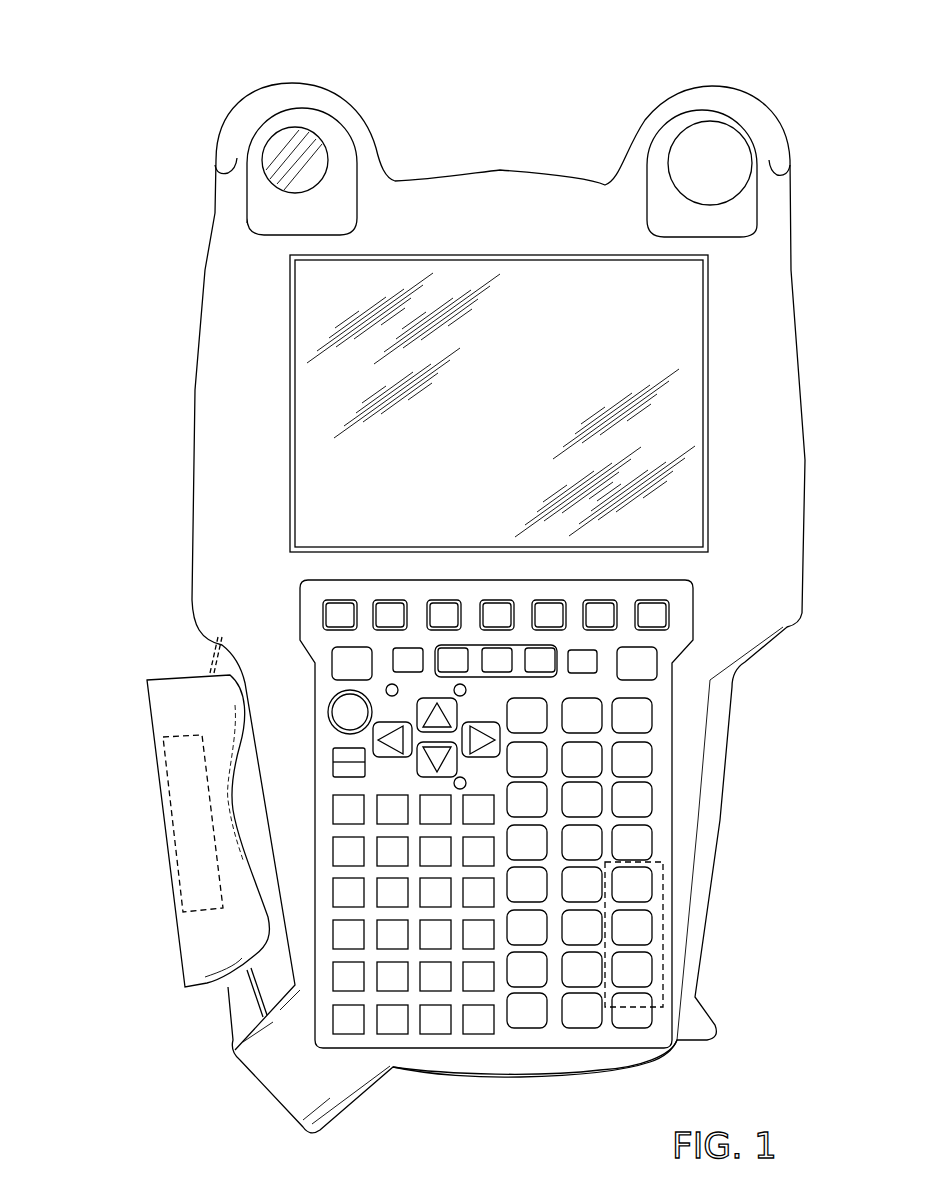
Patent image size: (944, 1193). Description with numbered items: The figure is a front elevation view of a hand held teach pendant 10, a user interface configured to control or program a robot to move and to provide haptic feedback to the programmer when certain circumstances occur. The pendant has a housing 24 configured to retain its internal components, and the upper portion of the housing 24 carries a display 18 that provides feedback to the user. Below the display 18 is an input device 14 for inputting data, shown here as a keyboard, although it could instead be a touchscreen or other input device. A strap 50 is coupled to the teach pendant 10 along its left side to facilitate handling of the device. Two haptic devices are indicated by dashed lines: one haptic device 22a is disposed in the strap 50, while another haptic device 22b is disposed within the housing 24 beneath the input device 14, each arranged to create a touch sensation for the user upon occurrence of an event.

The teach pendant 10 is at (790, 55).
The input device 14 is at (633, 800).
The display 18 is at (683, 393).
The haptic device 22a is at (192, 872).
The haptic device 22b is at (658, 899).
The housing 24 is at (217, 400).
The strap 50 is at (198, 962).